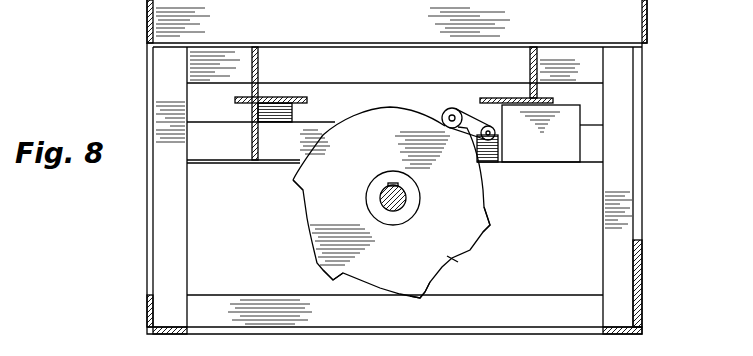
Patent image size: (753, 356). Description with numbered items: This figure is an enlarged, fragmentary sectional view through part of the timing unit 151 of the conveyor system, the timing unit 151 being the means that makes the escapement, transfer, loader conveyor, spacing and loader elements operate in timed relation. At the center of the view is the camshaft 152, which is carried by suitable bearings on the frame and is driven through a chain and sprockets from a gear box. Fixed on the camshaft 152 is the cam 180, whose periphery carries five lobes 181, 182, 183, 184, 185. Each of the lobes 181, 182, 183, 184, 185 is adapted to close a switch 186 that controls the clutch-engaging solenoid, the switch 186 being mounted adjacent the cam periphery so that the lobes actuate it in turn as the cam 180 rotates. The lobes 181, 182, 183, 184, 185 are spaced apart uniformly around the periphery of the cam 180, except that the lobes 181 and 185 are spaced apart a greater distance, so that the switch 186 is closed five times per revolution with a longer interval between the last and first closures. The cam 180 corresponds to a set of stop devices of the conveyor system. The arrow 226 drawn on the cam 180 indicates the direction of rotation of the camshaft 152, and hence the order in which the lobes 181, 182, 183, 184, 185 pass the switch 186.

The timing unit 151 is at (266, 243).
The camshaft 152 is at (388, 224).
The cam 180 is at (453, 259).
The lobe 181 is at (480, 158).
The lobe 182 is at (492, 226).
The lobe 183 is at (421, 299).
The lobe 184 is at (322, 273).
The lobe 185 is at (292, 182).
The switch 186 is at (543, 150).
The arrow 226 is at (332, 186).